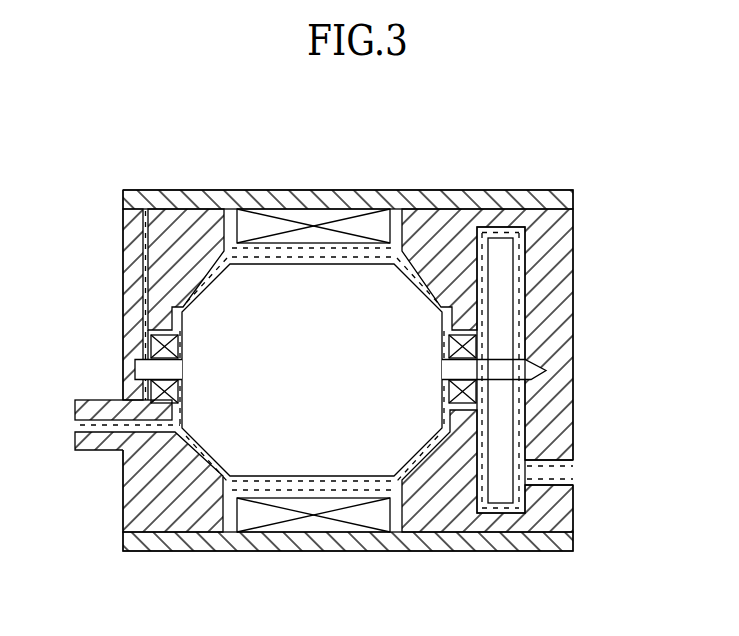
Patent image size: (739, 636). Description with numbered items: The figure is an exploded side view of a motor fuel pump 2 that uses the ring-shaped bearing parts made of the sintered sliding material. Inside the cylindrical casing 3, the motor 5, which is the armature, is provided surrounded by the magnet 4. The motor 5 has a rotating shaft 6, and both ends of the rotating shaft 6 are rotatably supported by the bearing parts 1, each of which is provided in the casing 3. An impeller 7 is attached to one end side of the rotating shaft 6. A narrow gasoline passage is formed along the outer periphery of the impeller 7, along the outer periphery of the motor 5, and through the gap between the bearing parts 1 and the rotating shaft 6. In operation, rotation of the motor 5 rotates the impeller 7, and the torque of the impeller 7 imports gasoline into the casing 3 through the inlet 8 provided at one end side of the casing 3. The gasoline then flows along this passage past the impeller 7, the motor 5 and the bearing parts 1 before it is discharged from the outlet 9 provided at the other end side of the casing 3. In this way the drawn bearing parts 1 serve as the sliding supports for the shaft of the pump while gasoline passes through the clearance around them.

The bearing part 1 is at (153, 347).
The motor fuel pump 2 is at (536, 172).
The casing 3 is at (208, 190).
The magnet 4 is at (313, 213).
The motor 5 is at (410, 312).
The rotating shaft 6 is at (547, 373).
The impeller 7 is at (503, 287).
The inlet 8 is at (560, 471).
The outlet 9 is at (88, 423).